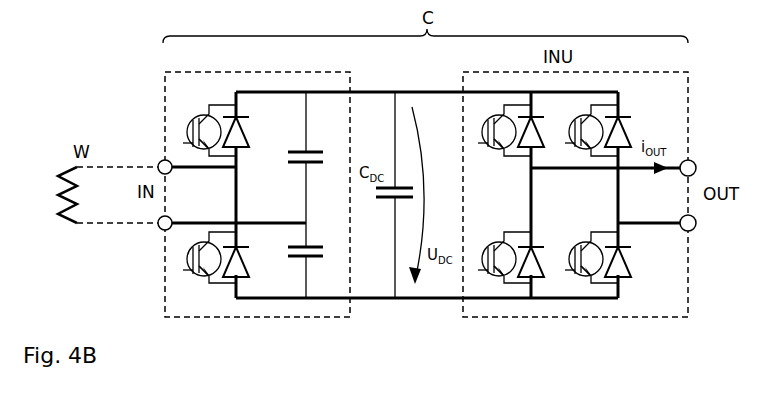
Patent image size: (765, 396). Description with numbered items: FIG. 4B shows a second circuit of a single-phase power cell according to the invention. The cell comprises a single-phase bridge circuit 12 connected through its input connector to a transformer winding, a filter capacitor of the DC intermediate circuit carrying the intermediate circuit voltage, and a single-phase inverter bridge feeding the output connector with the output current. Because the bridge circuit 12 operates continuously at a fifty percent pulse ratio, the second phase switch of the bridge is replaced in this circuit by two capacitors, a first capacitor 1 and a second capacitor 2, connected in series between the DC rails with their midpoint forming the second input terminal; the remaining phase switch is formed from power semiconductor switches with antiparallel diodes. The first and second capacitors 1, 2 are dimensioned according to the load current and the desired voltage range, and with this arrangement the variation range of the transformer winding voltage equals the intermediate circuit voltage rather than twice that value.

The bridge circuit AFE12 12 is at (254, 182).
The capacitor C1 1 is at (309, 157).
The capacitor C2 2 is at (310, 258).